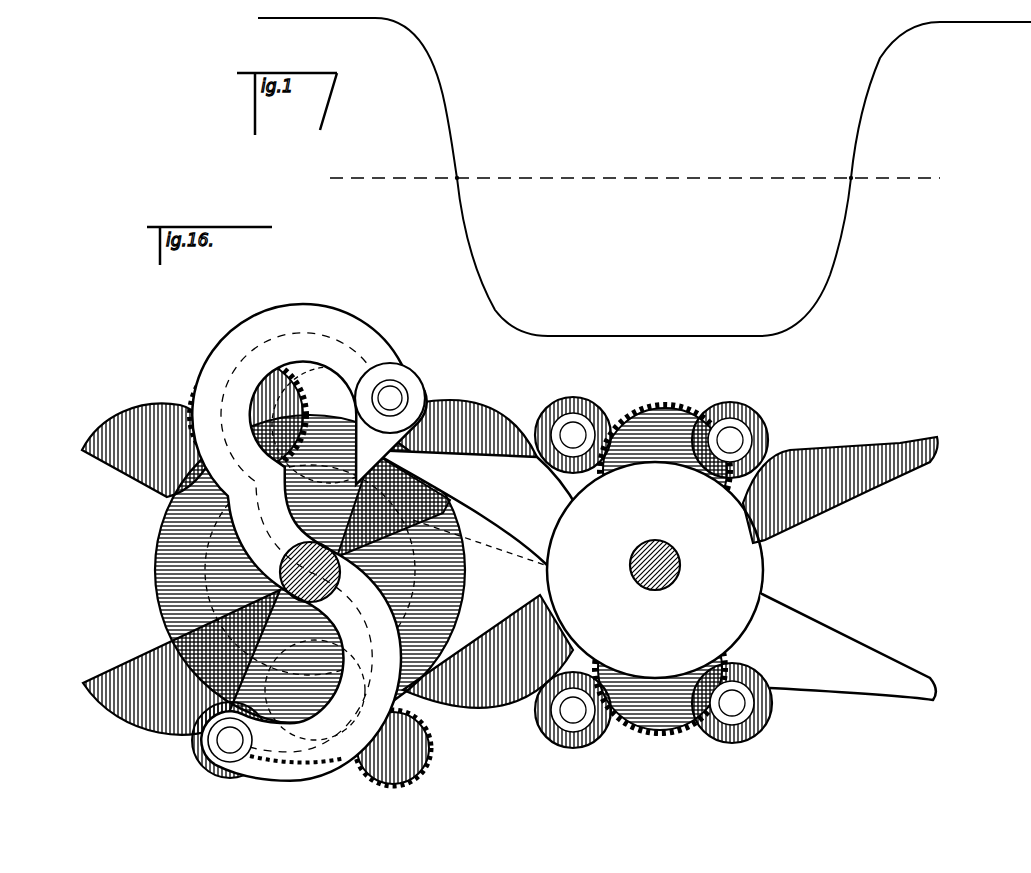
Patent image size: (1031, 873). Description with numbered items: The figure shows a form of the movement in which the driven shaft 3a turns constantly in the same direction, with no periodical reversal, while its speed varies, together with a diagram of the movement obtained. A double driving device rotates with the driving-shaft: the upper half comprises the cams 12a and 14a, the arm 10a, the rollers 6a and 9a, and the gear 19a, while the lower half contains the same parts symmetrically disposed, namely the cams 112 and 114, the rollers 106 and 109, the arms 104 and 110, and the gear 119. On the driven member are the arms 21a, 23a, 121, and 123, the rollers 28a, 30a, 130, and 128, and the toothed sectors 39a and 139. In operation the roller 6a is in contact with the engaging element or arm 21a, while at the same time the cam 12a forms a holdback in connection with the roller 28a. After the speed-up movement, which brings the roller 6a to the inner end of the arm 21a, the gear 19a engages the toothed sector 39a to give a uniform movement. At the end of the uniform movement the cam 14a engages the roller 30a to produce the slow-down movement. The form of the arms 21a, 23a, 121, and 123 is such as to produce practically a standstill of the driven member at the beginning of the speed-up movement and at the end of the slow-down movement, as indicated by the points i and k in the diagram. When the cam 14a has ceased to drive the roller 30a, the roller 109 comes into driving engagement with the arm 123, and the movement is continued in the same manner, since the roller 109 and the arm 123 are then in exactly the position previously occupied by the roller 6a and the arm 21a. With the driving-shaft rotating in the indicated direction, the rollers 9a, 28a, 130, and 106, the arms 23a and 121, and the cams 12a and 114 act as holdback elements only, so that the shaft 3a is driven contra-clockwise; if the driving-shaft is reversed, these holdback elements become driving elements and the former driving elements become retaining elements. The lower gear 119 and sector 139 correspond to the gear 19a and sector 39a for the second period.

In FIG. 17, the standstill point i is at (460, 182).
In FIG. 17, the standstill point k is at (848, 182).
In FIG. 16, the roller 9a is at (236, 362).
In FIG. 16, the arm 10a is at (318, 370).
In FIG. 16, the toothed sector 39a is at (670, 408).
In FIG. 16, the toothed sector 139 is at (667, 730).
In FIG. 16, the cam 14a is at (98, 470).
In FIG. 16, the cam 114 is at (138, 737).
In FIG. 16, the cam 12a is at (485, 408).
In FIG. 16, the gear 19a is at (198, 380).
In FIG. 16, the arm 21a is at (512, 480).
In FIG. 16, the arm 121 is at (513, 617).
In FIG. 16, the cam 112 is at (480, 725).
In FIG. 16, the arm 104 is at (370, 780).
In FIG. 16, the roller 109 is at (212, 778).
In FIG. 16, the arm 110 is at (285, 775).
In FIG. 16, the gear 119 is at (315, 695).
In FIG. 16, the roller 106 is at (420, 770).
In FIG. 16, the roller 6a is at (425, 385).
In FIG. 16, the roller 28a is at (578, 396).
In FIG. 16, the roller 30a is at (762, 412).
In FIG. 16, the roller 130 is at (765, 730).
In FIG. 16, the roller 128 is at (597, 745).
In FIG. 16, the arm 23a is at (882, 455).
In FIG. 16, the arm 123 is at (848, 646).
In FIG. 16, the driven shaft 3a is at (682, 567).